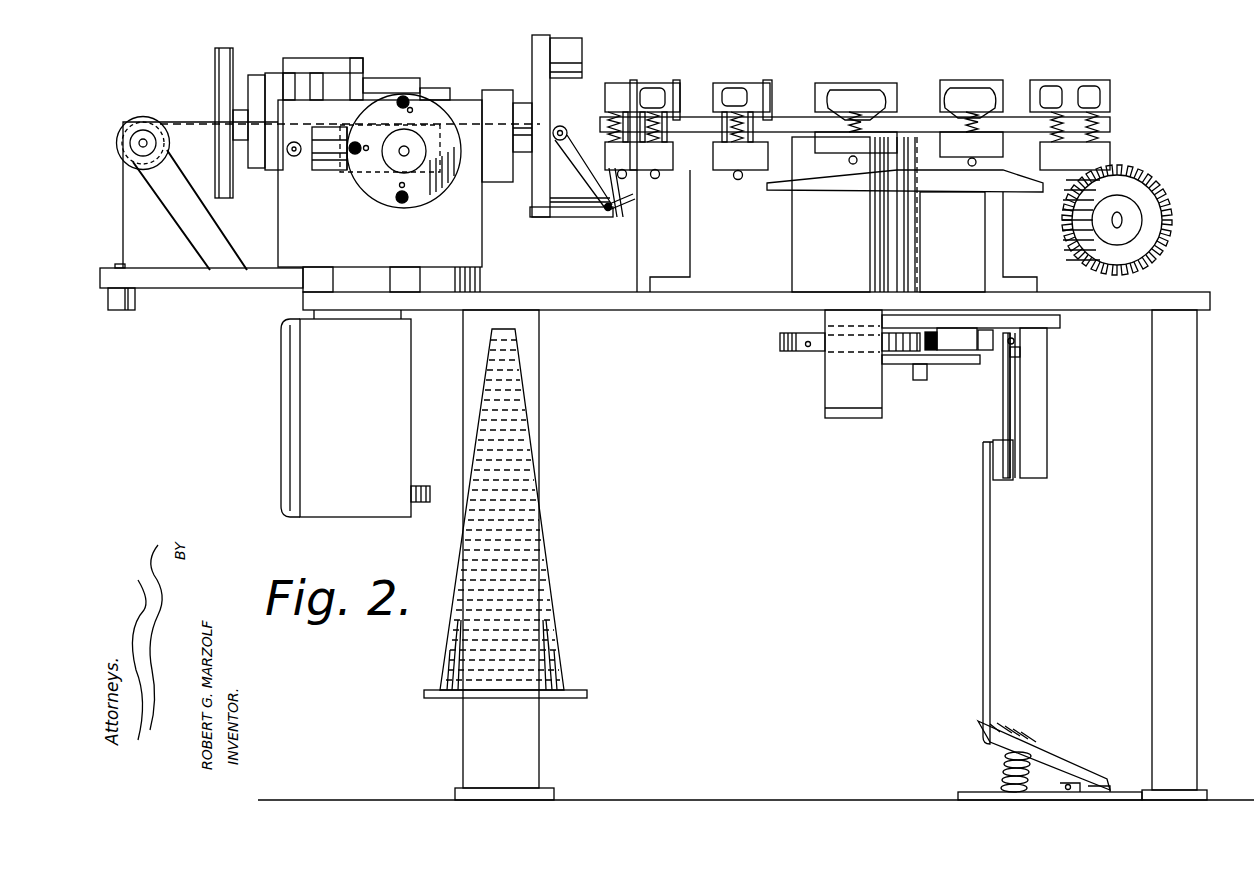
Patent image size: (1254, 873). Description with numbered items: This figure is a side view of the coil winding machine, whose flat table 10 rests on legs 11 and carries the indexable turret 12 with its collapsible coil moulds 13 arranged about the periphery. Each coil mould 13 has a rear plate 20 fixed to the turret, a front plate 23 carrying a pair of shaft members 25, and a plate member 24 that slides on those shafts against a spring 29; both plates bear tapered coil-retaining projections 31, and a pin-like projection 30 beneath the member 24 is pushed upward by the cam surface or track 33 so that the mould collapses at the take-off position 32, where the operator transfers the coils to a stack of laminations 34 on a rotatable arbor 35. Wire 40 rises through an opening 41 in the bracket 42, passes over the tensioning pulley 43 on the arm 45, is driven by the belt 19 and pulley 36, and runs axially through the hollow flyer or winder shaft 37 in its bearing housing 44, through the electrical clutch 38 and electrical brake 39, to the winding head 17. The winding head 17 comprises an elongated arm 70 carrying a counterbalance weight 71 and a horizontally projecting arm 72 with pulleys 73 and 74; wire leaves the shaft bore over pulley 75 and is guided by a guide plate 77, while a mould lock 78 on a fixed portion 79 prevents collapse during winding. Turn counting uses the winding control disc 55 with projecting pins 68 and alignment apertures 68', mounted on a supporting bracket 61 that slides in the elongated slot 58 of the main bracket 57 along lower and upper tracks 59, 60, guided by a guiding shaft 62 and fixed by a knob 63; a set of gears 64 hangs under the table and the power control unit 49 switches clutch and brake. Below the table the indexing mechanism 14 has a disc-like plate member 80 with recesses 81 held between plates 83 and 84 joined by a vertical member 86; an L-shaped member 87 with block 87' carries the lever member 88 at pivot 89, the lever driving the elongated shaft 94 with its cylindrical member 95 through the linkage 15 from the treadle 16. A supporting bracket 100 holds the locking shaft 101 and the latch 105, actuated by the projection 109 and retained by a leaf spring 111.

The table 10 is at (1216, 306).
The legs 11 is at (530, 752).
The turret 12 is at (790, 120).
The coil moulds 13 is at (645, 82).
The indexing mechanism 14 is at (942, 372).
The linkage 15 is at (983, 530).
The treadle 16 is at (1055, 745).
The winding head 17 is at (570, 217).
The belt 19 is at (226, 48).
The rear plate 20 is at (850, 90).
The front plate 23 is at (890, 92).
The plate member 24 is at (735, 178).
The shaft members 25 is at (718, 130).
The spring 29 is at (888, 100).
The pin-like projection 30 is at (740, 195).
The coil-retaining projection 31 is at (605, 95).
The take-off position 32 is at (1130, 292).
The cam surface or track 33 is at (935, 195).
The stack of laminations 34 is at (1148, 180).
The rotatable arbor 35 is at (1142, 215).
The pulley 36 is at (215, 60).
The flyer or winder shaft 37 is at (254, 75).
The electrical clutch 38 is at (274, 73).
The electrical brake 39 is at (357, 58).
The wire 40 is at (123, 232).
The opening 41 is at (125, 264).
The bracket 42 is at (180, 292).
The tensioning pulley 43 is at (143, 116).
The housing 44 is at (495, 92).
The arm 45 is at (210, 228).
The power control unit 49 is at (300, 380).
The winding control disc 55 is at (425, 198).
The main bracket 57 is at (468, 162).
The elongated slot 58 is at (300, 160).
The lower track 59 is at (338, 178).
The upper track 60 is at (335, 130).
The supporting bracket 61 is at (445, 115).
The guiding shaft 62 is at (328, 175).
The knob 63 is at (305, 80).
The set of gears 64 is at (560, 622).
The projecting pins 68 is at (393, 147).
The apertures 68' is at (415, 143).
The elongated arm 70 is at (545, 42).
The counterbalance weight 71 is at (582, 48).
The horizontally projecting arm 72 is at (548, 218).
The pulley 73 is at (605, 207).
The pulley 74 is at (608, 215).
The pulley 75 is at (562, 126).
The guide plate 77 is at (636, 200).
The mould lock 78 is at (607, 130).
The fixed portion 79 is at (645, 252).
The disc-like plate member 80 is at (782, 336).
The recesses 81 is at (808, 348).
The plate 83 is at (1058, 322).
The plate 84 is at (845, 415).
The vertical member 86 is at (825, 392).
The L-shaped member 87 is at (1059, 403).
The block 87' is at (1057, 405).
The lever member 88 is at (1006, 415).
The pivot 89 is at (1012, 480).
The elongated shaft 94 is at (970, 365).
The cylindrical member 95 is at (913, 375).
The supporting bracket 100 is at (965, 328).
The locking shaft 101 is at (958, 300).
The latch 105 is at (1020, 355).
The projection 109 is at (1014, 343).
The leaf spring 111 is at (1000, 330).